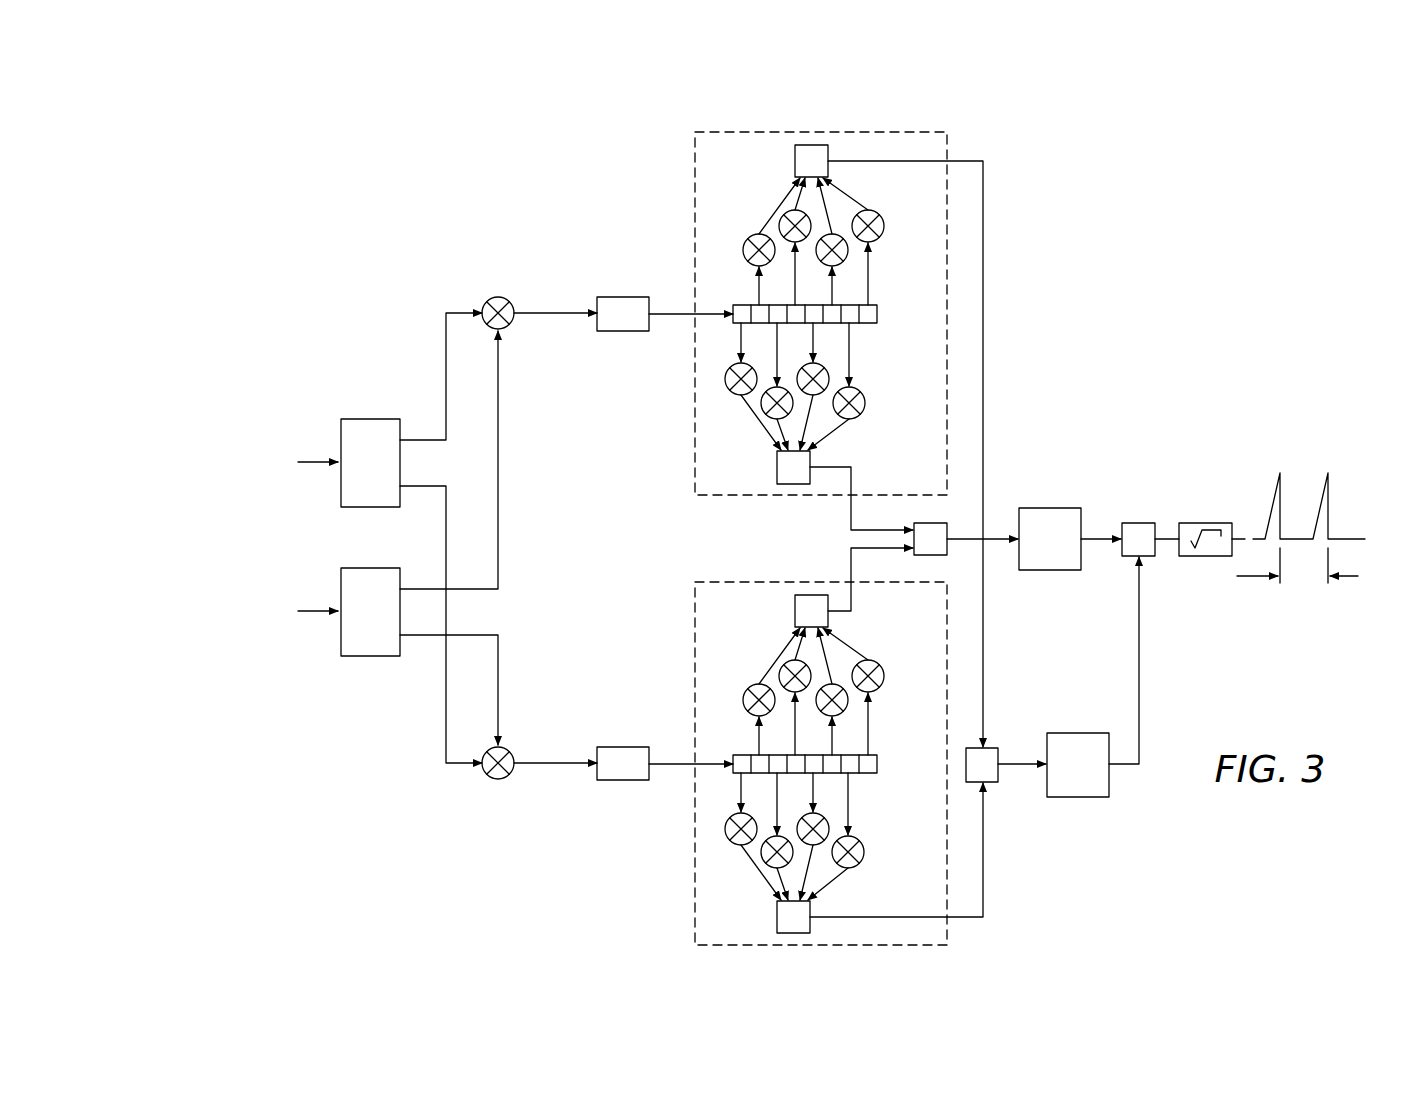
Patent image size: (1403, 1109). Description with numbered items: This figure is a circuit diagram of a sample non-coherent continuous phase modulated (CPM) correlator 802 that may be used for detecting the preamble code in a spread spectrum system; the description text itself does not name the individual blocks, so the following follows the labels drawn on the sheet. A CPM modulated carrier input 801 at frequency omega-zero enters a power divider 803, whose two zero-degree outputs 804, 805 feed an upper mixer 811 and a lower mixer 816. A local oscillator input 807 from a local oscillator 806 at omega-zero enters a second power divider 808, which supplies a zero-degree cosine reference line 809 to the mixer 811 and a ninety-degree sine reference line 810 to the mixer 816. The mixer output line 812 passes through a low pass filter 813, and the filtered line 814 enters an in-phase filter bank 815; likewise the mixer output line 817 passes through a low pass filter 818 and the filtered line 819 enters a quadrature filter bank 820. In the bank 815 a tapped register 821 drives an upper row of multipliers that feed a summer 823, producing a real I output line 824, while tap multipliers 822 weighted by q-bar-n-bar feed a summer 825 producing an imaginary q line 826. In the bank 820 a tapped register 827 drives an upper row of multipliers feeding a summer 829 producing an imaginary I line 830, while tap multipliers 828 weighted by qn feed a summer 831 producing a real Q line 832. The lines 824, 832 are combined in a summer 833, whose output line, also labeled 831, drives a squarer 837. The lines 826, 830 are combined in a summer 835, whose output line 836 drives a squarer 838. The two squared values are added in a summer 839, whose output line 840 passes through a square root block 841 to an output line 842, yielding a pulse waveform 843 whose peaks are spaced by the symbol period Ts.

The CPM modulated carrier input 801 is at (303, 456).
The receiver / detector system 802 is at (352, 300).
The power divider 803 is at (352, 419).
The first power divider output line 804 is at (445, 330).
The second power divider output line 805 is at (445, 535).
The local oscillator 806 is at (243, 612).
The local oscillator input 807 is at (306, 608).
The local oscillator power divider 808 is at (370, 656).
The cosine local oscillator signal line 809 is at (498, 522).
The sine local oscillator signal line 810 is at (498, 662).
The in-phase mixer 811 is at (497, 297).
The mixer output line 812 is at (547, 311).
The low pass filter 813 is at (623, 297).
The filtered in-phase signal line 814 is at (666, 318).
The in-phase matched filter bank 815 is at (667, 198).
The quadrature mixer 816 is at (497, 781).
The quadrature mixer output line 817 is at (548, 767).
The low pass filter 818 is at (620, 780).
The filtered quadrature signal line 819 is at (665, 760).
The quadrature matched filter bank 820 is at (687, 907).
The tapped delay line register 821 is at (878, 313).
The tap weight multipliers 822 is at (860, 323).
The summer 823 is at (795, 161).
The real I output line 824 is at (983, 268).
The summer 825 is at (793, 485).
The imaginary q output line 826 is at (852, 477).
The tapped delay line register 827 is at (878, 763).
The tap weight multipliers 828 is at (860, 773).
The summer 829 is at (795, 611).
The imaginary I output line 830 is at (852, 600).
The summer 831 is at (777, 917).
The real Q output line 832 is at (966, 918).
The summer 833 is at (998, 778).
The summer 835 is at (914, 541).
The summer output line 836 is at (997, 537).
The squarer 837 is at (1087, 797).
The squarer 838 is at (1050, 508).
The summer 839 is at (1137, 523).
The summer output line 840 is at (1166, 545).
The square root block 841 is at (1192, 523).
The output line 842 is at (1241, 535).
The output pulse waveform 843 is at (1327, 480).